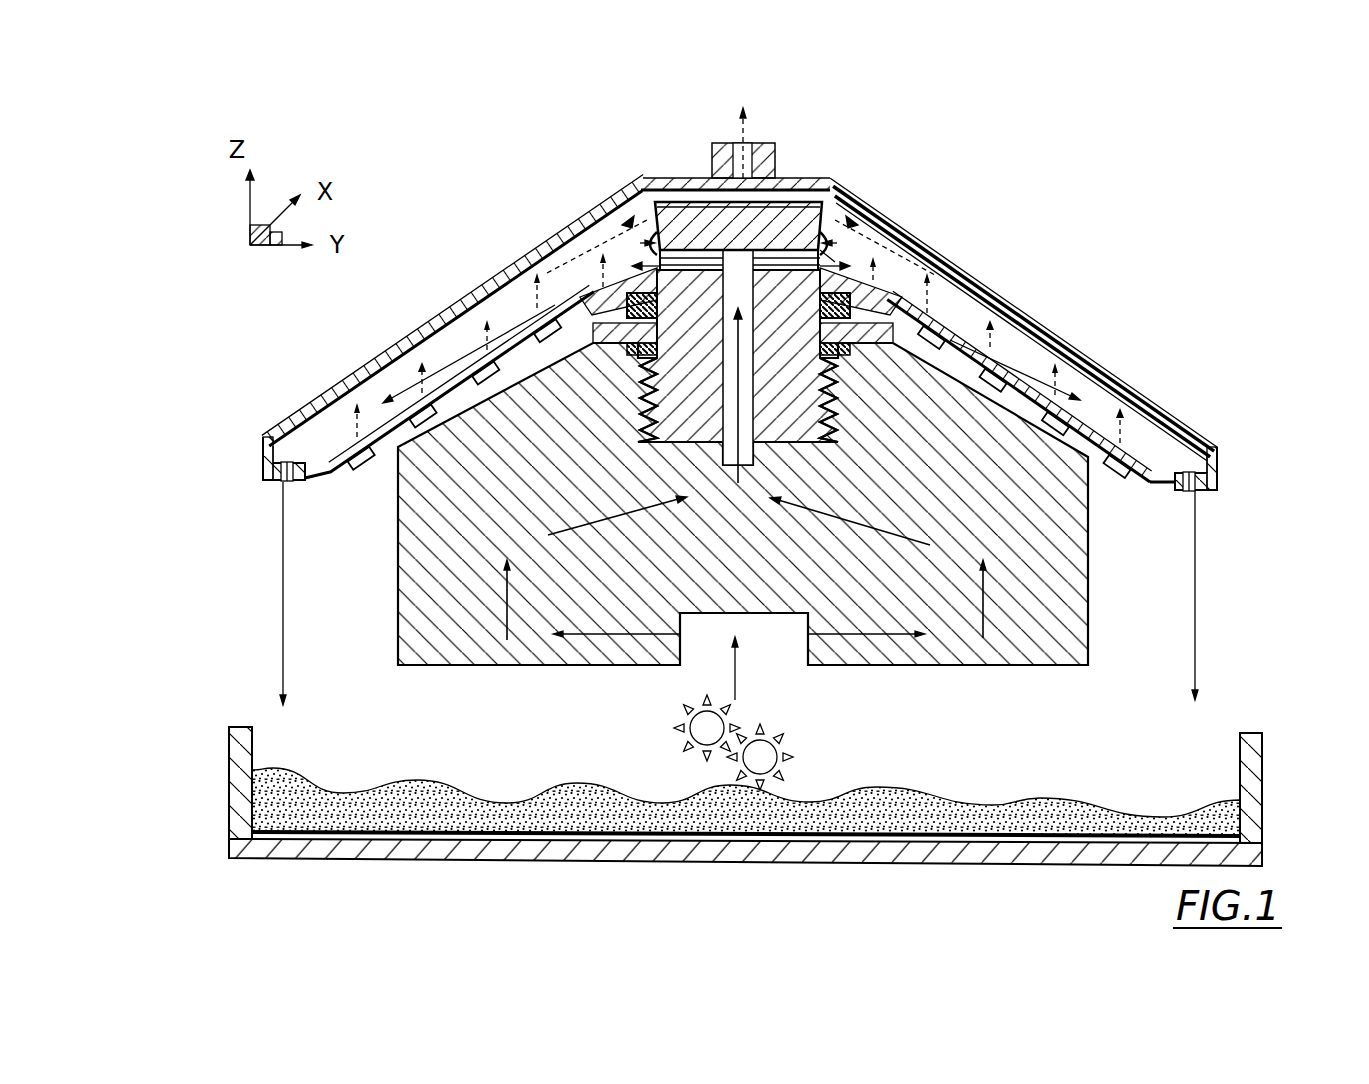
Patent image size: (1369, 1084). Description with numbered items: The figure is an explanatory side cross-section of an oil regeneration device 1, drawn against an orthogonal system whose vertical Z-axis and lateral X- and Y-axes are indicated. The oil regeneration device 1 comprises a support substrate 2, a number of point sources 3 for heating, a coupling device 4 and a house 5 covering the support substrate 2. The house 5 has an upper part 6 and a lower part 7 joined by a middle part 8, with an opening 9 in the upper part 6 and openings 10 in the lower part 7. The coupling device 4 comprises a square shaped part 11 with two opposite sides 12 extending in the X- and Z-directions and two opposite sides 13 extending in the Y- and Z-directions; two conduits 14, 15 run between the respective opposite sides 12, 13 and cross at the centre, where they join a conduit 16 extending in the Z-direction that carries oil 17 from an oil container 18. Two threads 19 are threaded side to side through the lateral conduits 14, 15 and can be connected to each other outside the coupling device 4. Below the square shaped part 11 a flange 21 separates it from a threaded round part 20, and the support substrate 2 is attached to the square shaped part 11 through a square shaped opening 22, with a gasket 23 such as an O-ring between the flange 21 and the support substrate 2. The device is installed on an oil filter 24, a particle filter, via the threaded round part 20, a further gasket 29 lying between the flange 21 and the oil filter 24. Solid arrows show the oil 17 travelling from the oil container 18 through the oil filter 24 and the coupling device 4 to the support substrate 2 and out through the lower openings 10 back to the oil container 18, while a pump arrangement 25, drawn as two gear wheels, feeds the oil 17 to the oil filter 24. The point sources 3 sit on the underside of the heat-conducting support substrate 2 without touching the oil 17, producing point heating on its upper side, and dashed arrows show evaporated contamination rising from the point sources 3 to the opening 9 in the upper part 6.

The oil regeneration device 1 is at (1122, 205).
The support substrate 2 is at (1060, 380).
The point sources 3 is at (617, 435).
The coupling device 4 is at (788, 225).
The house 5 is at (496, 262).
The upper part 6 is at (784, 166).
The lower part 7 is at (250, 462).
The middle part 8 is at (395, 329).
The opening 9 is at (750, 145).
The openings 10 is at (278, 483).
The square shaped part 11 is at (862, 255).
The opposite sides 12 is at (655, 283).
The opposite sides 13 is at (672, 220).
The conduit 14 is at (905, 240).
The conduit 15 is at (735, 258).
The conduit 16 is at (720, 408).
The oil 17 is at (285, 770).
The oil container 18 is at (230, 794).
The threads 19 is at (832, 262).
The threaded round part 20 is at (893, 345).
The flange 21 is at (933, 267).
The square shaped opening 22 is at (570, 290).
The gasket 23 is at (527, 290).
The oil filter 24 is at (413, 590).
The pump arrangement 25 is at (804, 750).
The gasket 29 is at (555, 347).